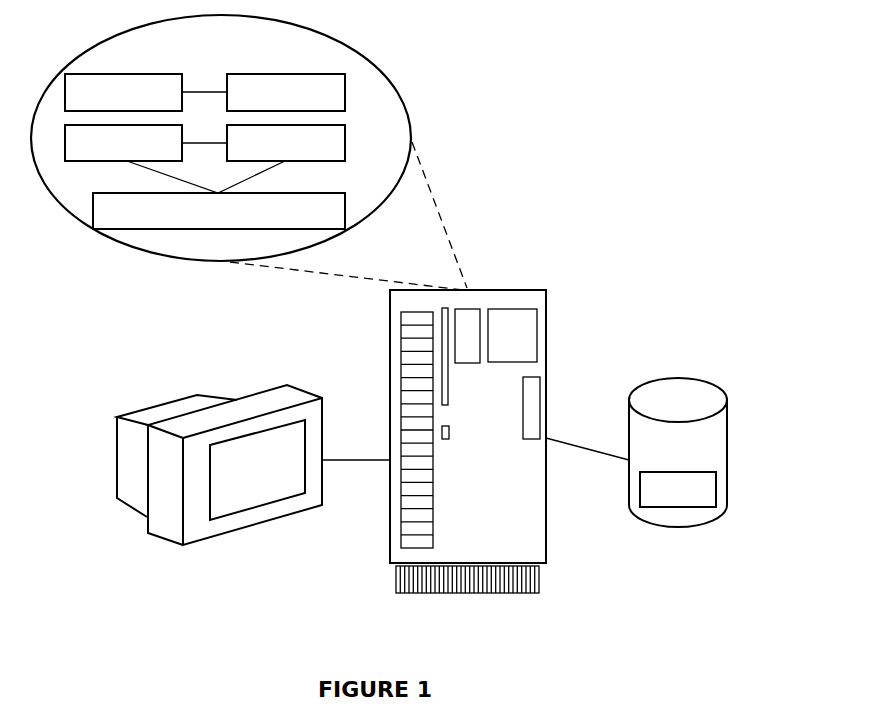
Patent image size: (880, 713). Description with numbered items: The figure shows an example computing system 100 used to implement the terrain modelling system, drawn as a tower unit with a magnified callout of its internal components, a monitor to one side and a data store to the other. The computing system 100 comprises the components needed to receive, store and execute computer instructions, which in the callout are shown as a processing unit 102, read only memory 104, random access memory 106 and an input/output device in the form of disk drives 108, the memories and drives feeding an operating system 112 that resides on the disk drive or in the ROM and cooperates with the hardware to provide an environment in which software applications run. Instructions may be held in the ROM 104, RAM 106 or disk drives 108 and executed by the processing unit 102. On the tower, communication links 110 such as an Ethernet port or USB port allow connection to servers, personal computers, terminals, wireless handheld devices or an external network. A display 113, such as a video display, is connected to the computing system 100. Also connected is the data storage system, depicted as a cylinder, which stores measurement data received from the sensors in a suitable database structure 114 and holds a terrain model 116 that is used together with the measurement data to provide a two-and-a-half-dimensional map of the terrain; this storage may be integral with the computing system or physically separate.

The computing system 100 is at (529, 339).
The processing unit 102 is at (123, 92).
The read only memory (ROM) 104 is at (286, 92).
The random access memory (RAM) 106 is at (123, 143).
The disk drives 108 is at (286, 143).
The communication links 110 is at (545, 330).
The operating system 112 is at (219, 211).
The display 113 is at (222, 463).
The database structure 114 is at (691, 460).
The terrain model 116 is at (722, 496).